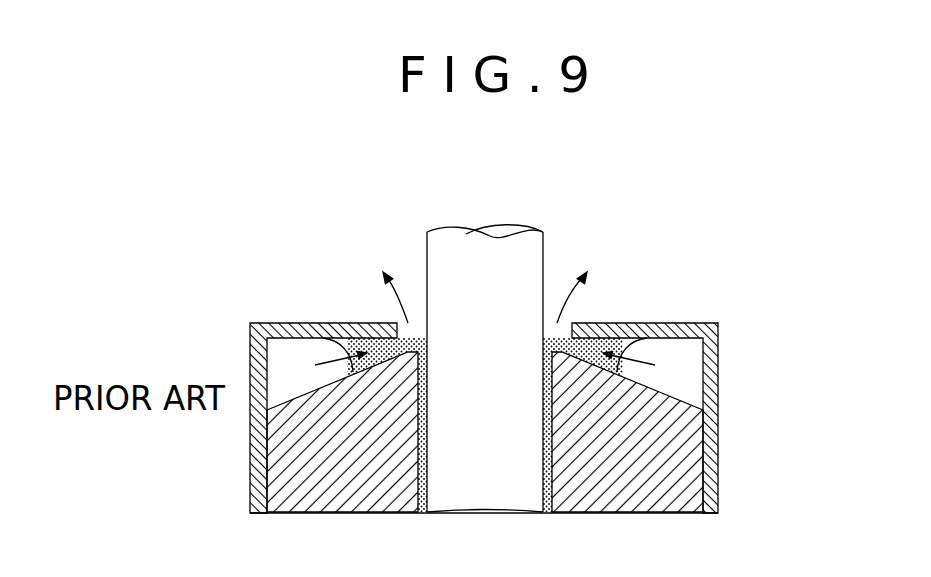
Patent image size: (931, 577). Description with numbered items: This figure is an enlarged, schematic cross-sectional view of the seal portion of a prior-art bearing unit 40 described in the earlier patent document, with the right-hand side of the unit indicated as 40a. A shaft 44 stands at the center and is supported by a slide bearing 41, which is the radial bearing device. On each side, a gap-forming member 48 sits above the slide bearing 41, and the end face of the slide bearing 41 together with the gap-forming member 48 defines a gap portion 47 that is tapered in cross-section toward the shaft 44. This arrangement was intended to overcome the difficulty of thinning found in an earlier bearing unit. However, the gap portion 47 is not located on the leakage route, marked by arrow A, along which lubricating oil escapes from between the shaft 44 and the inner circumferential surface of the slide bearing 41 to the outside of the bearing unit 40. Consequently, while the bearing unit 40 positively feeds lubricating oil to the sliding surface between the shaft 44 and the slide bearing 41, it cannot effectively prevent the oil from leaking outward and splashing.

The bearing unit 40 is at (336, 242).
The bearing device side 40a is at (675, 330).
The shaft 44 is at (490, 262).
The gap portion 47 is at (675, 363).
The slide bearing 41 is at (660, 402).
The gap-forming member 48 is at (712, 460).